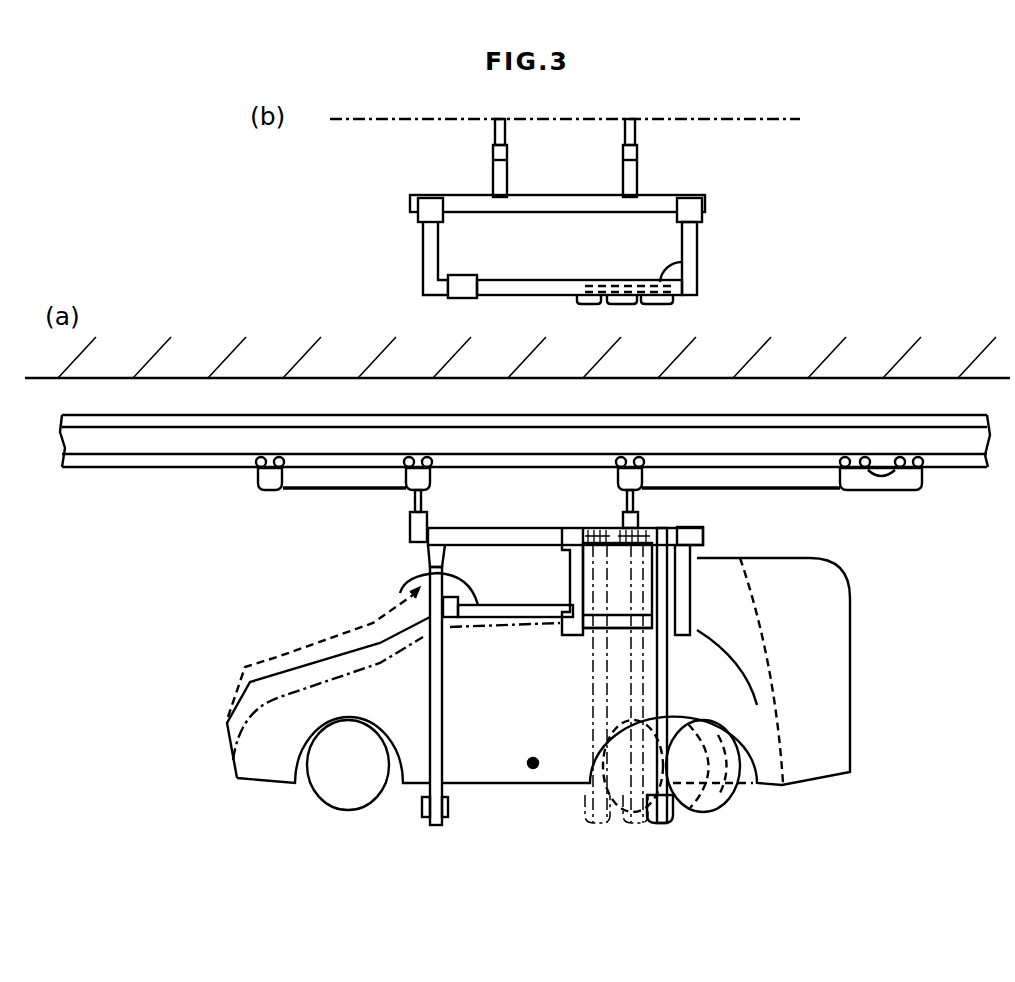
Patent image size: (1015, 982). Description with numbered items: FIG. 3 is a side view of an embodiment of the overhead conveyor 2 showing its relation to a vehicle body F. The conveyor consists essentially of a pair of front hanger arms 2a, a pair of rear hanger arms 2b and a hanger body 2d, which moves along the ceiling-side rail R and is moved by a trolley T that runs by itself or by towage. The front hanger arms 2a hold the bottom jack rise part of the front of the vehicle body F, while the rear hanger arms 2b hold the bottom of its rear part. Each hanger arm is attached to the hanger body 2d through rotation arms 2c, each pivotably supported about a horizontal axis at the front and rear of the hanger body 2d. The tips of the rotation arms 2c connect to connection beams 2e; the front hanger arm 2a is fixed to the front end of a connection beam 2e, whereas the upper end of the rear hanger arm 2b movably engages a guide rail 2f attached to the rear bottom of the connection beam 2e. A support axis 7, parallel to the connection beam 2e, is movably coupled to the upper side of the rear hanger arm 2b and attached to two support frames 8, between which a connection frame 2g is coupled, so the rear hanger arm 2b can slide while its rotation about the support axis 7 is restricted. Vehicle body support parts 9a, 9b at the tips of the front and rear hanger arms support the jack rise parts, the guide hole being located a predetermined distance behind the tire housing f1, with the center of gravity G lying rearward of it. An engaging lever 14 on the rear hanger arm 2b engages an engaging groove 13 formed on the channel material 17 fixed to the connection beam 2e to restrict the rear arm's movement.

The overhead conveyor 2 is at (517, 512).
The front hanger arm 2a is at (440, 690).
The rear hanger arm 2b is at (665, 690).
The rotation arm 2c is at (430, 250).
The hanger body 2d is at (632, 192).
The connection beam 2e is at (515, 292).
The guide rail 2f is at (705, 270).
The connection frame 2g is at (420, 585).
The support axis 7 is at (620, 630).
The support frame 8 is at (580, 578).
The vehicle body support part 9a is at (455, 826).
The vehicle body support part 9b is at (682, 828).
The engaging groove 13 is at (662, 302).
The engaging lever 14 is at (600, 530).
The channel material 17 is at (686, 300).
The vehicle body F is at (280, 693).
The tire housing f1 is at (385, 738).
The center of gravity of the vehicle body G is at (530, 770).
The rail R is at (918, 440).
The trolley T is at (262, 485).